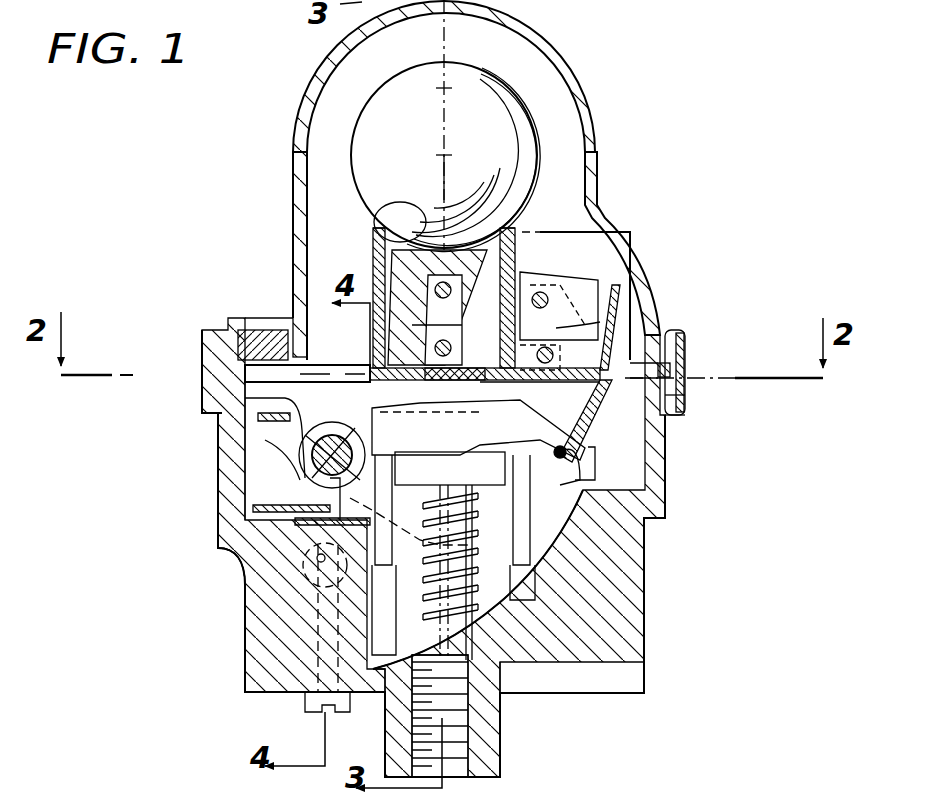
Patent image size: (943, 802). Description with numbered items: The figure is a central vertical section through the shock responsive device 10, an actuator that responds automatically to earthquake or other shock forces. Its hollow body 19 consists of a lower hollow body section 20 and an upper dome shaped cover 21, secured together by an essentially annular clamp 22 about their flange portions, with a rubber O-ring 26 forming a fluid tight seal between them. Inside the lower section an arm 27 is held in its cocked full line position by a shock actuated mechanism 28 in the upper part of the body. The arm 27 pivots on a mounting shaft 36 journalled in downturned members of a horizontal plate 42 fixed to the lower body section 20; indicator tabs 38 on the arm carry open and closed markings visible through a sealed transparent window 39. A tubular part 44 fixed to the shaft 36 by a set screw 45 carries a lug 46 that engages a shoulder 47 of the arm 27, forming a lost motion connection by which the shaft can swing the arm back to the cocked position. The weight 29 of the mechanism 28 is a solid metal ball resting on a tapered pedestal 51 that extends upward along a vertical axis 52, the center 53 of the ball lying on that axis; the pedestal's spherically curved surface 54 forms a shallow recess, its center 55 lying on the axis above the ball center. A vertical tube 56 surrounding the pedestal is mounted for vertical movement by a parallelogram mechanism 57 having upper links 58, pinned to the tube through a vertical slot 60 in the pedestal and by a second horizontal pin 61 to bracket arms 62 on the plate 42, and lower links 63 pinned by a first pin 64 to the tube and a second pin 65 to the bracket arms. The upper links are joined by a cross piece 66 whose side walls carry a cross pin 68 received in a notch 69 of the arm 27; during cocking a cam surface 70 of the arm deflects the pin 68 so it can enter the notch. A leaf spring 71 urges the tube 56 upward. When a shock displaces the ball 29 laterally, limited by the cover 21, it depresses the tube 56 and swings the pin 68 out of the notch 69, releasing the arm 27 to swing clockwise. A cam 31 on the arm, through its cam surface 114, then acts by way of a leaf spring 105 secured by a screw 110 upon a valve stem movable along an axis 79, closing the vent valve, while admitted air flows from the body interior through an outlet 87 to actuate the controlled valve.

The device 10 is at (712, 96).
The hollow body 19 is at (692, 350).
The lower hollow body section 20 is at (666, 492).
The upper cover 21 is at (598, 128).
The annular clamp 22 is at (672, 418).
The rubber O-ring 26 is at (672, 362).
The arm 27 is at (465, 539).
The shock actuated mechanism 28 is at (550, 95).
The weight 29 is at (445, 126).
The cam 31 is at (336, 432).
The mounting shaft 36 is at (320, 500).
The indicator tabs 38 is at (300, 412).
The transparent window 39 is at (266, 326).
The horizontal plate 42 is at (688, 404).
The tubular part 44 is at (300, 462).
The set screw 45 is at (312, 432).
The lug 46 is at (395, 512).
The shoulder 47 is at (422, 381).
The pedestal 51 is at (396, 258).
The vertical axis 52 is at (443, 178).
The center of the ball 53 is at (444, 153).
The spherically curved surface 54 is at (372, 205).
The center of spherical surface 55 is at (444, 86).
The vertical tube 56 is at (520, 236).
The parallelogram mechanism 57 is at (606, 224).
The upper links 58 is at (560, 278).
The vertical slot 60 is at (443, 320).
The second horizontal pin 61 is at (540, 296).
The bracket arms 62 is at (585, 333).
The lower links 63 is at (538, 350).
The first pin 64 is at (412, 330).
The second pin 65 is at (538, 384).
The cross piece 66 is at (655, 270).
The cross pin 68 is at (558, 458).
The notch 69 is at (478, 430).
The cam surface 70 is at (596, 424).
The leaf spring 71 is at (410, 358).
The axis 79 is at (320, 560).
The outlet 87 is at (452, 722).
The leaf spring 105 is at (262, 486).
The screw 110 is at (240, 552).
The cam surface 114 is at (405, 470).